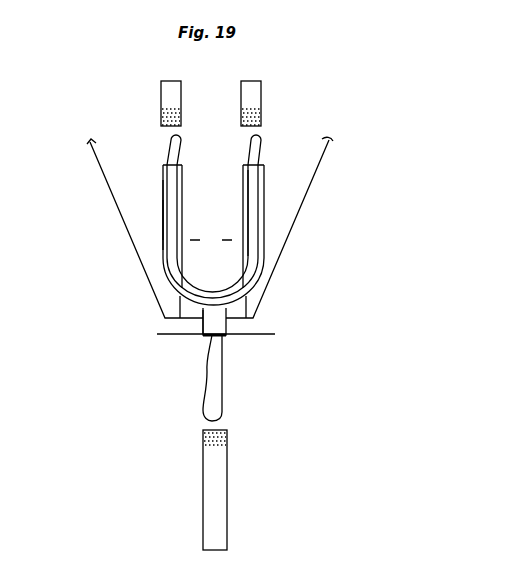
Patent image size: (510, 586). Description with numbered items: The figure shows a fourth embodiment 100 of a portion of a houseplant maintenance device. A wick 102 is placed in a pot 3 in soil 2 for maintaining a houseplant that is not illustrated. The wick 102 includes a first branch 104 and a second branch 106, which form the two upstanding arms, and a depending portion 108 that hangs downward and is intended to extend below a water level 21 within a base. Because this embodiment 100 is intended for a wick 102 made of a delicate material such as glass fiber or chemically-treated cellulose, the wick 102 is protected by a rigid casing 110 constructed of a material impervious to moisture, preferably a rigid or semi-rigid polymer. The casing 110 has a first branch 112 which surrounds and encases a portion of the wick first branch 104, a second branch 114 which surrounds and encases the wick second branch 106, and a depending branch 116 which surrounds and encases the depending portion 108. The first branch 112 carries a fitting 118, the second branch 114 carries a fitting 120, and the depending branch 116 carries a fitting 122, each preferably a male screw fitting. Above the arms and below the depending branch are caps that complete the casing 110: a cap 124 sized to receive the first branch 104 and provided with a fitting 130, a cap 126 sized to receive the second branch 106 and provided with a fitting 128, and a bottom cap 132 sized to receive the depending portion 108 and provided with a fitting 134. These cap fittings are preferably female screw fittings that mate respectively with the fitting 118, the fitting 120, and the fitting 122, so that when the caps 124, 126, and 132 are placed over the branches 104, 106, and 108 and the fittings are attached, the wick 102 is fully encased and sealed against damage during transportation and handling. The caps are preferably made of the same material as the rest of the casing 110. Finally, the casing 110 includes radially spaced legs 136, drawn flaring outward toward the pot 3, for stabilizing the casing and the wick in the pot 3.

The fourth embodiment 100 is at (98, 400).
The wick 102 is at (150, 181).
The first branch 104 is at (259, 148).
The second branch 106 is at (170, 145).
The depending portion 108 is at (222, 376).
The rigid casing 110 is at (265, 248).
The first branch 112 is at (263, 229).
The second branch 114 is at (163, 238).
The depending branch 116 is at (203, 323).
The fitting 118 is at (265, 178).
The fitting 120 is at (160, 193).
The fitting 122 is at (226, 328).
The cap 124 is at (252, 92).
The cap 126 is at (170, 92).
The fitting 128 is at (170, 118).
The fitting 130 is at (242, 110).
The bottom cap 132 is at (215, 507).
The fitting 134 is at (227, 444).
The radially spaced legs 136 is at (250, 301).
The soil 2 is at (211, 242).
The pot 3 is at (273, 272).
The water level 21 is at (258, 334).